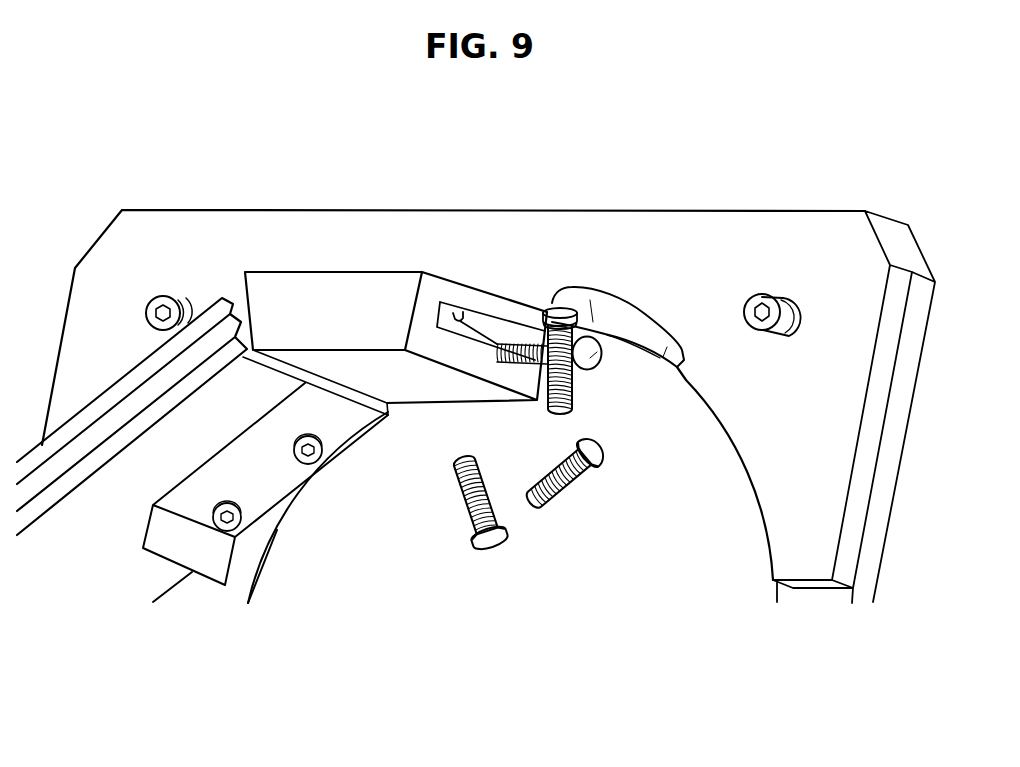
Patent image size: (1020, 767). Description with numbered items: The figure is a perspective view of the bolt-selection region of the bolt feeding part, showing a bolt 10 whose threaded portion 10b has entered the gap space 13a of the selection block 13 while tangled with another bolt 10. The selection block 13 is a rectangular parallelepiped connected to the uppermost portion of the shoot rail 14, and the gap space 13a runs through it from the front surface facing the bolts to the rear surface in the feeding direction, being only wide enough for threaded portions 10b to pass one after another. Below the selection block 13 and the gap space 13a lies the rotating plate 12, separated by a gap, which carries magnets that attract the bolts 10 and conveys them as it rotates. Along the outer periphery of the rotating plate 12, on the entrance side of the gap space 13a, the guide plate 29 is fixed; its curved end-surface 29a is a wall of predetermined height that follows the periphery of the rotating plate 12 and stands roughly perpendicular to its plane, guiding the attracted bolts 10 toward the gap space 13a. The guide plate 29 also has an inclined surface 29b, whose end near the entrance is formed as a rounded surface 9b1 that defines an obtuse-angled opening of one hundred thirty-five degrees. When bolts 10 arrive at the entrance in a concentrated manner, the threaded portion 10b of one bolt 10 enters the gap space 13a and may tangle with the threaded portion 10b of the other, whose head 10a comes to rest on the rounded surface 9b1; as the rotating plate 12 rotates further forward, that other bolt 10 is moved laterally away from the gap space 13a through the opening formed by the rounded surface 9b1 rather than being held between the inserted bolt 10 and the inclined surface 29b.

The rounded surface 9b1 is at (572, 300).
The bolt 10 is at (591, 270).
The head 10a is at (597, 340).
The threaded portion 10b is at (503, 343).
The rotating plate 12 is at (717, 562).
The selection block 13 is at (337, 292).
The gap space 13a is at (495, 318).
The shoot rail 14 is at (102, 407).
The guide plate 29 is at (787, 243).
The curved end-surface 29a is at (750, 483).
The inclined surface 29b is at (633, 317).